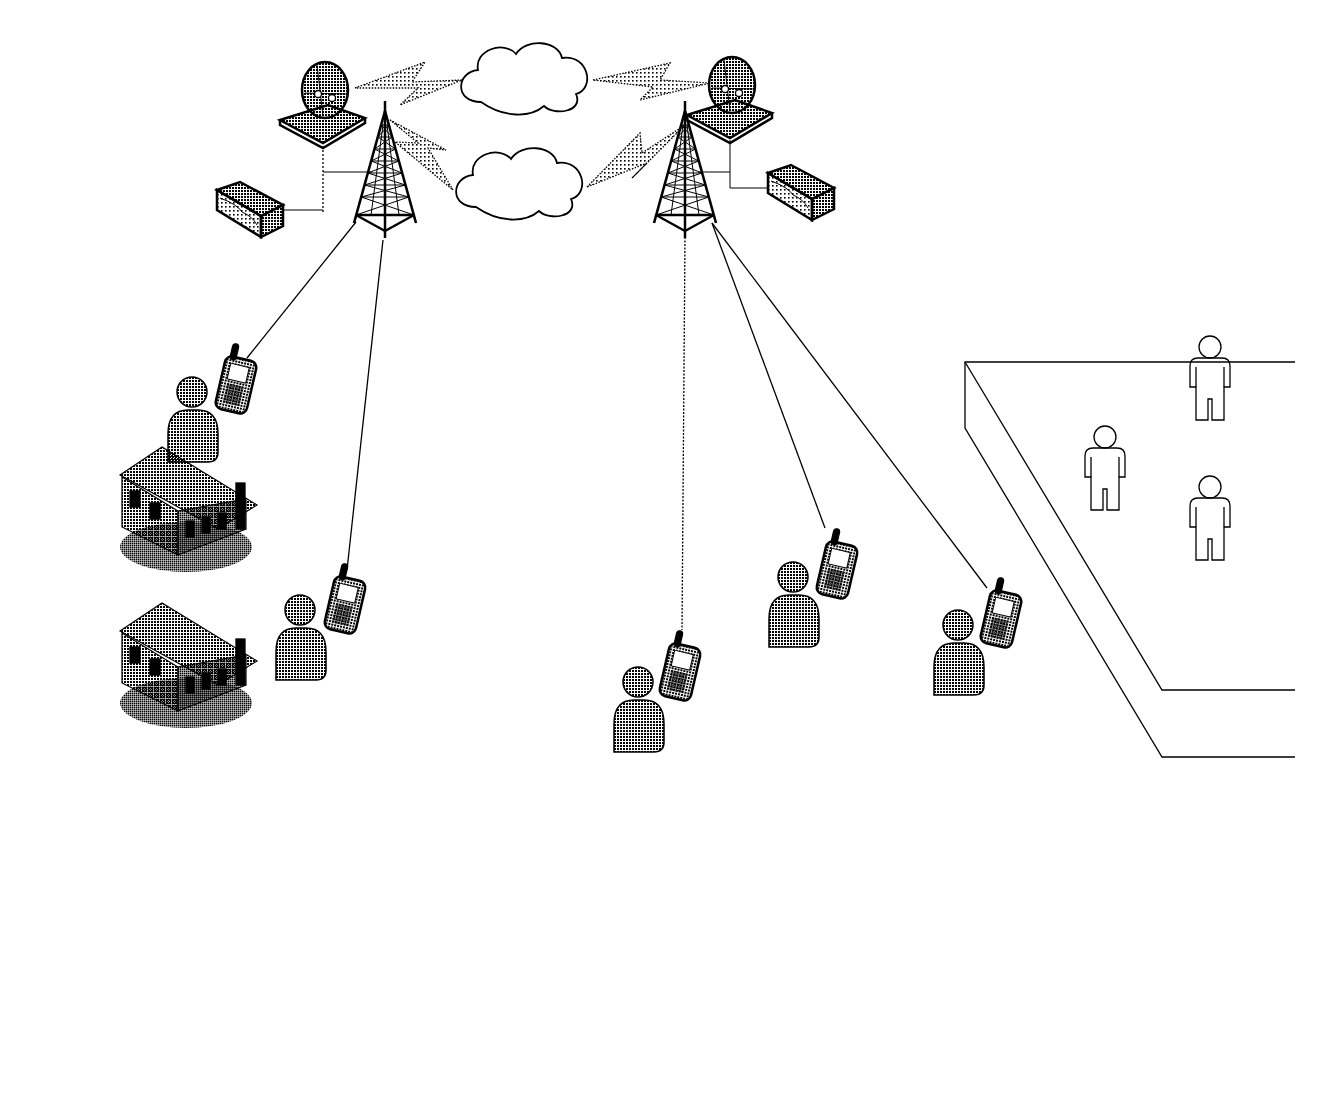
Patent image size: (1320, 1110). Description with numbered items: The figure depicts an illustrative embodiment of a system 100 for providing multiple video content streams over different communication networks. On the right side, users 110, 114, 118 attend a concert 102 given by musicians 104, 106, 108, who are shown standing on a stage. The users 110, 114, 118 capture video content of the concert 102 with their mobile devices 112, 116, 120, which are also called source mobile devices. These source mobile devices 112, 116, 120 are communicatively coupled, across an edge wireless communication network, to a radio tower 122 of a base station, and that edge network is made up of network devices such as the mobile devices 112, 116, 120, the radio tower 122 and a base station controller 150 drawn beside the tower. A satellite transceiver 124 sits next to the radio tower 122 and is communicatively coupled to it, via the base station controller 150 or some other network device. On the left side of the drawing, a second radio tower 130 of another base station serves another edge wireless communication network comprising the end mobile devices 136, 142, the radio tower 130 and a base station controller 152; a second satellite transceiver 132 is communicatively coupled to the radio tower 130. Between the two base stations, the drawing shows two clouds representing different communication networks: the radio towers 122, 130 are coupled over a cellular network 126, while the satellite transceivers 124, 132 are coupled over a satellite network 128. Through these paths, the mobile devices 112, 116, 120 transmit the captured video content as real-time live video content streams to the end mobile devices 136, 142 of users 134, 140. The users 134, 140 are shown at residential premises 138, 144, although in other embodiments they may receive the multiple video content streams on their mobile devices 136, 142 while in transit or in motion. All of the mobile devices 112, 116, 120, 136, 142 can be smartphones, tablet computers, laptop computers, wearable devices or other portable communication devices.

The system 100 is at (695, 827).
The concert 102 is at (1130, 517).
The musician 104 is at (1113, 510).
The musician 106 is at (1223, 420).
The musician 108 is at (1223, 560).
The user 110 is at (935, 677).
The mobile device 112 is at (1020, 643).
The user 114 is at (770, 628).
The mobile device 116 is at (852, 593).
The user 118 is at (617, 730).
The mobile device 120 is at (698, 697).
The radio tower 122 is at (658, 222).
The satellite transceiver 124 is at (765, 117).
The cellular network 126 is at (519, 183).
The satellite network 128 is at (524, 78).
The radio tower 130 is at (414, 225).
The satellite transceiver 132 is at (285, 113).
The user 134 is at (170, 415).
The mobile device 136 is at (252, 410).
The residential premises 138 is at (252, 542).
The user 140 is at (278, 632).
The mobile device 142 is at (360, 627).
The residential premises 144 is at (250, 703).
The base station controller 150 is at (788, 163).
The base station controller 152 is at (238, 182).